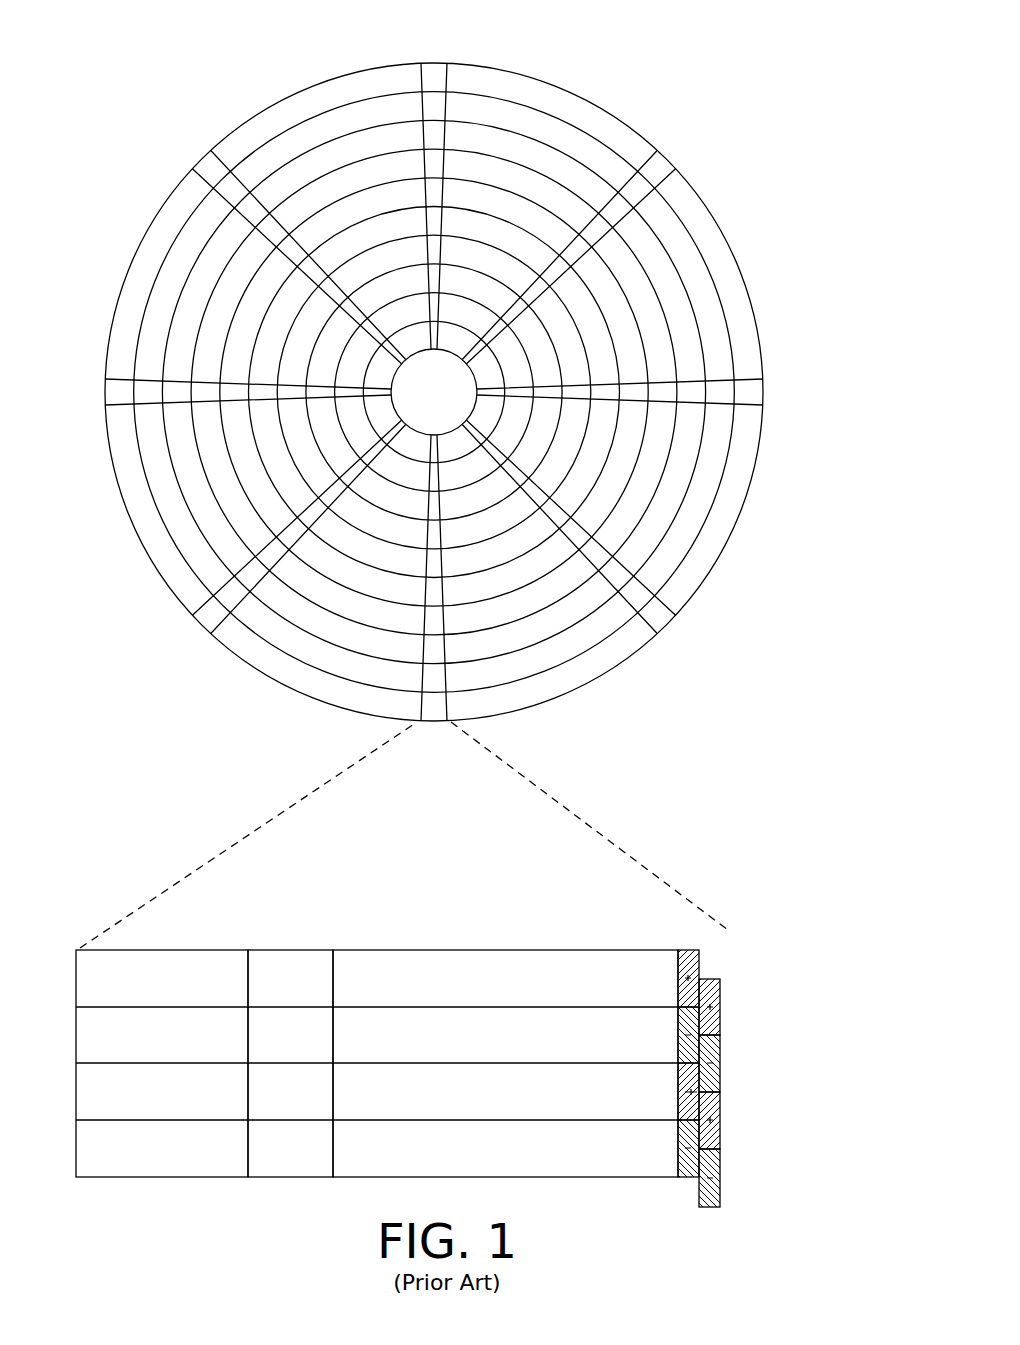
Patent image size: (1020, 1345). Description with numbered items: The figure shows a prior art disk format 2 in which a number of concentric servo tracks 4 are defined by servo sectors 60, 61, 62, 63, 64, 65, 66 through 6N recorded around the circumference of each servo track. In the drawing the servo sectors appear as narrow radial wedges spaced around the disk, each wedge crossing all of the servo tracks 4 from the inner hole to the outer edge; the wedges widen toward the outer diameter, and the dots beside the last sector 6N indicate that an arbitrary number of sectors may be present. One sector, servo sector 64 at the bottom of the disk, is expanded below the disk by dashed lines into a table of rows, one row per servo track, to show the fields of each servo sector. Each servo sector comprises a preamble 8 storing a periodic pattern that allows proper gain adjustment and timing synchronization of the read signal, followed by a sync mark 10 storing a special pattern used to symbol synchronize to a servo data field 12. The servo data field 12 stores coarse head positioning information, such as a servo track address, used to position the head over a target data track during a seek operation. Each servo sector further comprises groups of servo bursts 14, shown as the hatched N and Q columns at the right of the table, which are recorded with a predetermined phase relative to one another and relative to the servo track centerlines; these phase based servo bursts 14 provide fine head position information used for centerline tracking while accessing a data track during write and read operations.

The disk format 2 is at (186, 66).
The servo track 4 is at (547, 130).
The servo sector 60 is at (430, 75).
The servo sector 61 is at (660, 170).
The servo sector 62 is at (754, 393).
The servo sector 63 is at (660, 618).
The servo sector 64 is at (287, 794).
The servo sector 65 is at (205, 622).
The servo sector 66 is at (112, 393).
The servo sector 6N is at (208, 165).
The preamble 8 is at (172, 948).
The sync mark 10 is at (294, 948).
The servo data field 12 is at (494, 948).
The servo bursts 14 is at (722, 943).